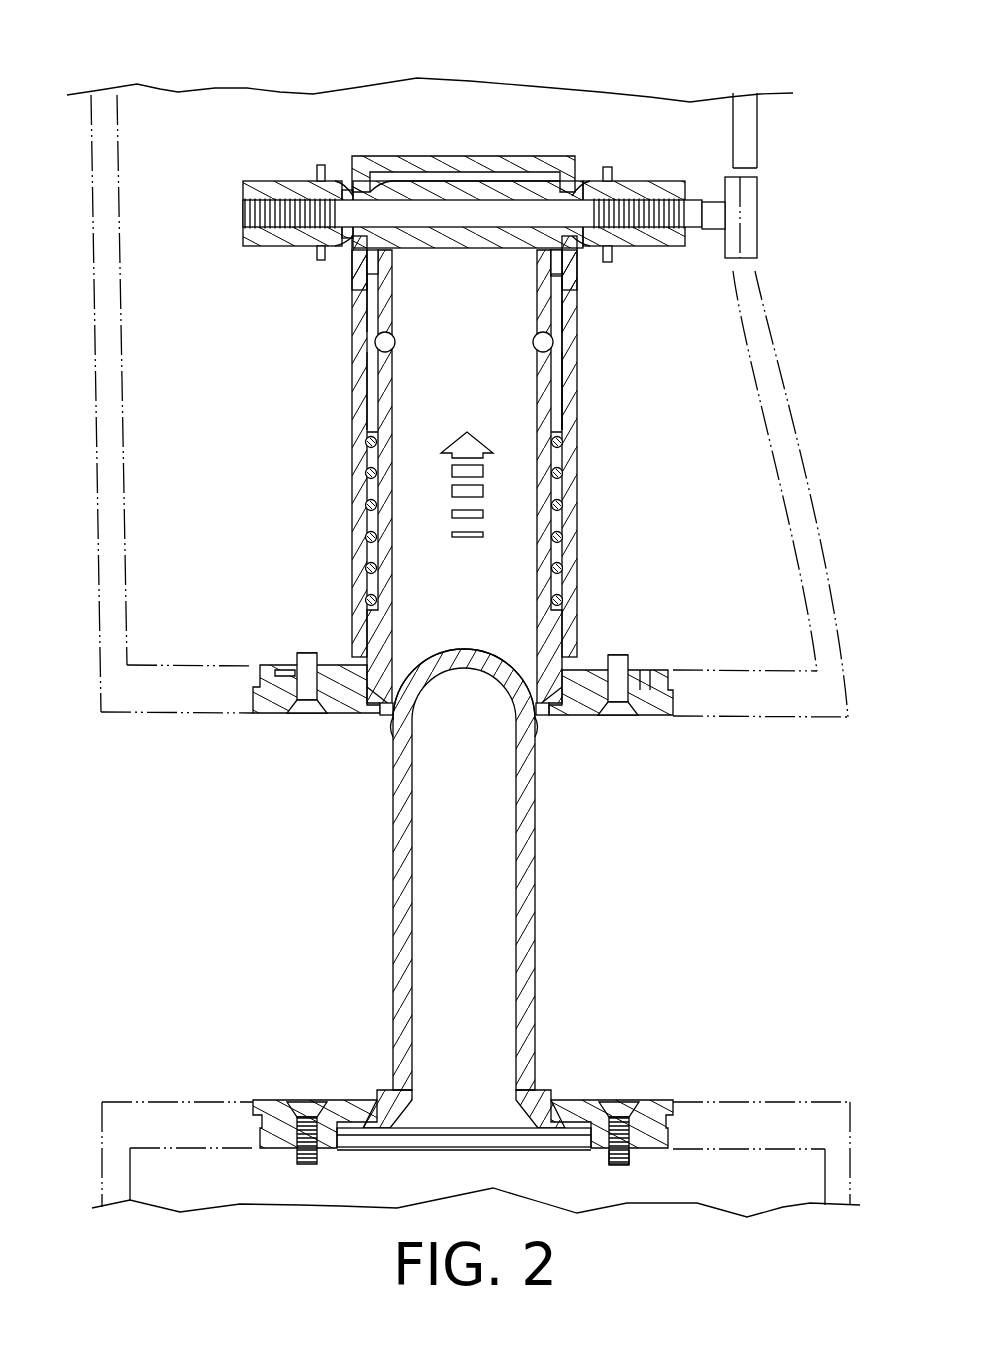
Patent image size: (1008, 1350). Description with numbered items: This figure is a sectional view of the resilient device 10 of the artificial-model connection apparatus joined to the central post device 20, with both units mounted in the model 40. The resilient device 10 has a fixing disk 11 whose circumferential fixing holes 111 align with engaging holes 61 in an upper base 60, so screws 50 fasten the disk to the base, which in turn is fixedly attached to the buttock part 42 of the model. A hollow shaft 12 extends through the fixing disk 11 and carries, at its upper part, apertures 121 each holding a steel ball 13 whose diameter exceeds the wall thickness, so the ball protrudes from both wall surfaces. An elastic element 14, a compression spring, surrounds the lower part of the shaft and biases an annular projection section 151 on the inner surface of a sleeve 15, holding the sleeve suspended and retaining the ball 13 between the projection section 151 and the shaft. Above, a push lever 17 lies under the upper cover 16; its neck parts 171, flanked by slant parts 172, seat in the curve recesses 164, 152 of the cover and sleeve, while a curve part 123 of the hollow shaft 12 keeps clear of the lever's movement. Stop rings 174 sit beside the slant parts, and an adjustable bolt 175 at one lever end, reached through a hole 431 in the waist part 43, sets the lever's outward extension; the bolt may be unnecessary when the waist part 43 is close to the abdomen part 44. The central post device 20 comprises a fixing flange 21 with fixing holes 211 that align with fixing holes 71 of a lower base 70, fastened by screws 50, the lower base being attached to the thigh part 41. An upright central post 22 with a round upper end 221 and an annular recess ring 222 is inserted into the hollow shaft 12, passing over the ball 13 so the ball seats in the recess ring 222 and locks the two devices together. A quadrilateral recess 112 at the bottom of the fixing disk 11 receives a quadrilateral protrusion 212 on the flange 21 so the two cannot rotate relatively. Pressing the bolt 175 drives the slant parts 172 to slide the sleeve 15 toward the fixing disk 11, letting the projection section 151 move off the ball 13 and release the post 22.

The resilient device 10 is at (268, 425).
The fixing disk 11 is at (340, 716).
The fixing holes 111 is at (612, 718).
The quadrilateral recess 112 is at (385, 718).
The hollow shaft 12 is at (366, 385).
The apertures 121 is at (556, 340).
The curve part 123 is at (538, 262).
The ball 13 is at (530, 346).
The elastic element 14 is at (578, 471).
The sleeve 15 is at (578, 411).
The annular projection section 151 is at (578, 374).
The curve recess 152 is at (572, 260).
The upper cover 16 is at (455, 156).
The curve recess 164 is at (562, 162).
The push lever 17 is at (645, 183).
The neck part 171 is at (358, 265).
The slant part 172 is at (345, 178).
The stop ring 174 is at (321, 164).
The adjustable bolt 175 is at (743, 212).
The central post device 20 is at (270, 945).
The fixing flange 21 is at (356, 1100).
The fixing holes 211 is at (580, 1100).
The quadrilateral protrusion 212 is at (538, 1062).
The central post 22 is at (391, 870).
The round upper end 221 is at (442, 648).
The annular recess ring 222 is at (540, 735).
The model 40 is at (114, 78).
The thigh part 41 is at (96, 1166).
The buttock part 42 is at (834, 597).
The waist part 43 is at (758, 292).
The hole 431 is at (758, 171).
The abdomen part 44 is at (86, 259).
The screws 50 is at (306, 651).
The upper base 60 is at (666, 716).
The engaging holes 61 is at (652, 673).
The lower base 70 is at (672, 1104).
The fixing holes 71 is at (632, 1158).